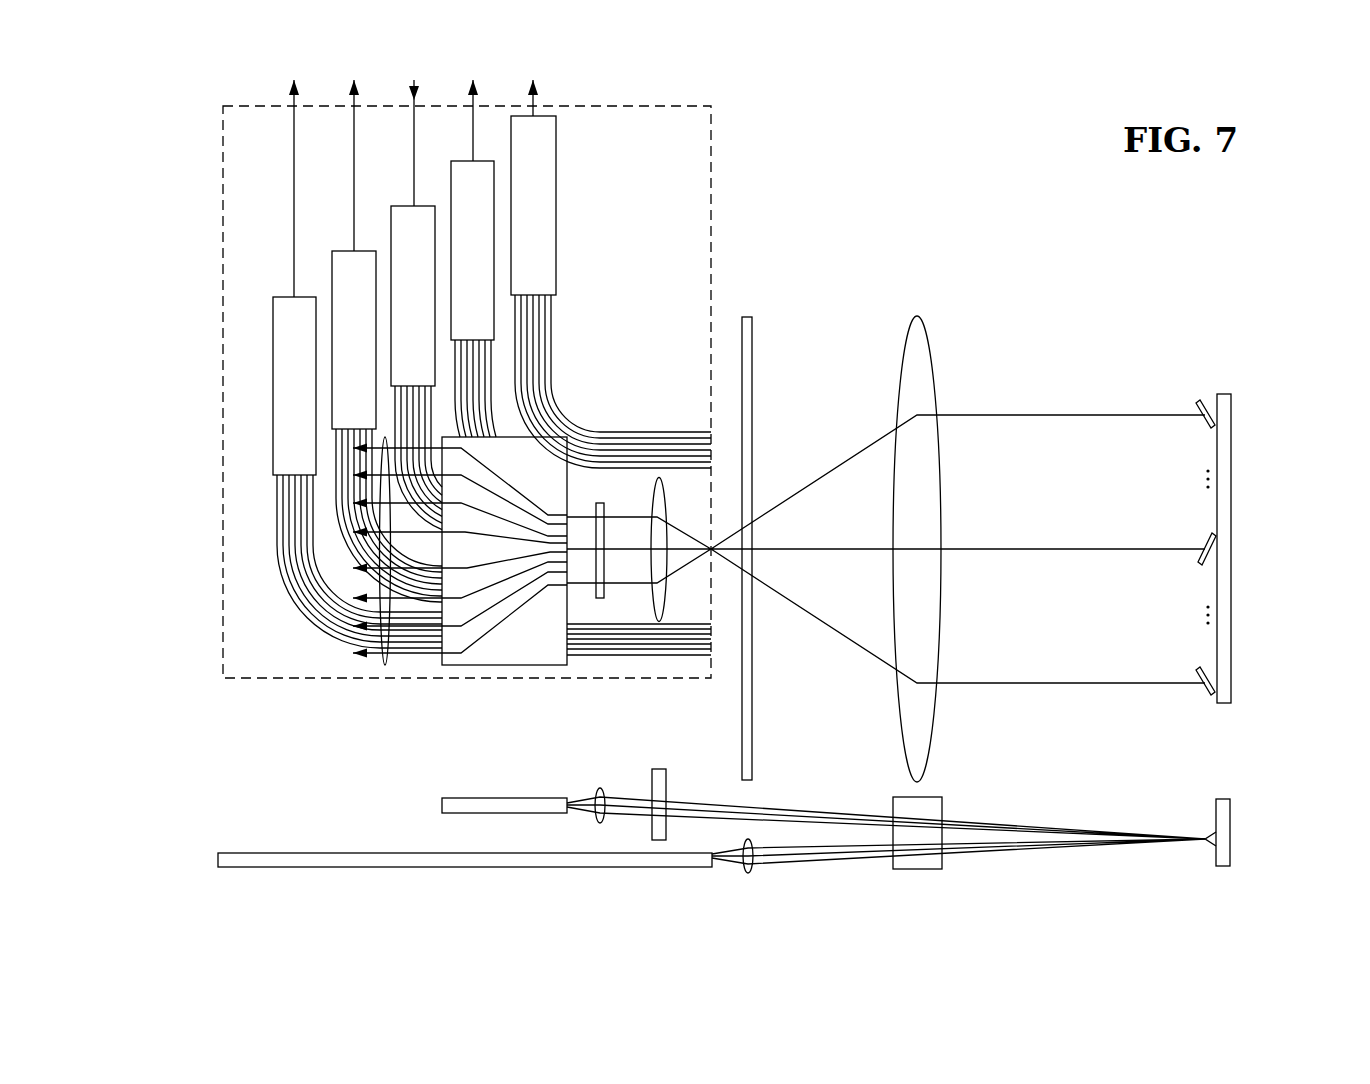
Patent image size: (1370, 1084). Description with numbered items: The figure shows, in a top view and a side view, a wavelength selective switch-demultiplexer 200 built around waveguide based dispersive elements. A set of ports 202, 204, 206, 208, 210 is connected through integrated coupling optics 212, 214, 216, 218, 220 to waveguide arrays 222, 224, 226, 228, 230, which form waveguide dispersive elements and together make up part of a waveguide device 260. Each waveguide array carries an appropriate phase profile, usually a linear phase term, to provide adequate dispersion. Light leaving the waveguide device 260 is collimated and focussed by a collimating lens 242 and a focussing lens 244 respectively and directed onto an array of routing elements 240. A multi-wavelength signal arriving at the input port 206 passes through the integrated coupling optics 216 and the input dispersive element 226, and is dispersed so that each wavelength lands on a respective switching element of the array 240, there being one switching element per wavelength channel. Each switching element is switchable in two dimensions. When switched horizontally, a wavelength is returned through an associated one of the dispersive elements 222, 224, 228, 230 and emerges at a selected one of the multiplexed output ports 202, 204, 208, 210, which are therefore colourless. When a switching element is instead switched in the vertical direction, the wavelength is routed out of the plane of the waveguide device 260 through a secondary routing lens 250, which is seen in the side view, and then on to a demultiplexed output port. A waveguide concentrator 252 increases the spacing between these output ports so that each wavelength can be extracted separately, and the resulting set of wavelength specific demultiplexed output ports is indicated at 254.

The wavelength selective switch-demultiplexer 200 is at (870, 192).
The multiplexed output port 202 is at (292, 95).
The multiplexed output port 204 is at (352, 95).
The input port 206 is at (412, 95).
The multiplexed output port 208 is at (472, 95).
The multiplexed output port 210 is at (538, 95).
The integrated coupling optics 212 is at (292, 296).
The integrated coupling optics 214 is at (352, 250).
The integrated coupling optics 216 is at (410, 205).
The integrated coupling optics 218 is at (467, 158).
The integrated coupling optics 220 is at (518, 108).
The waveguide array 222 is at (288, 548).
The waveguide array 224 is at (338, 489).
The input dispersive element 226 is at (422, 418).
The waveguide array 228 is at (482, 380).
The waveguide array 230 is at (540, 336).
The array of routing elements 240 is at (1232, 438).
The collimating lens 242 is at (752, 320).
The focussing lens 244 is at (934, 338).
The secondary routing lens 250 is at (665, 615).
The waveguide concentrator 252 is at (506, 667).
The demultiplexed output ports 254 is at (384, 668).
The waveguide device 260 is at (222, 400).